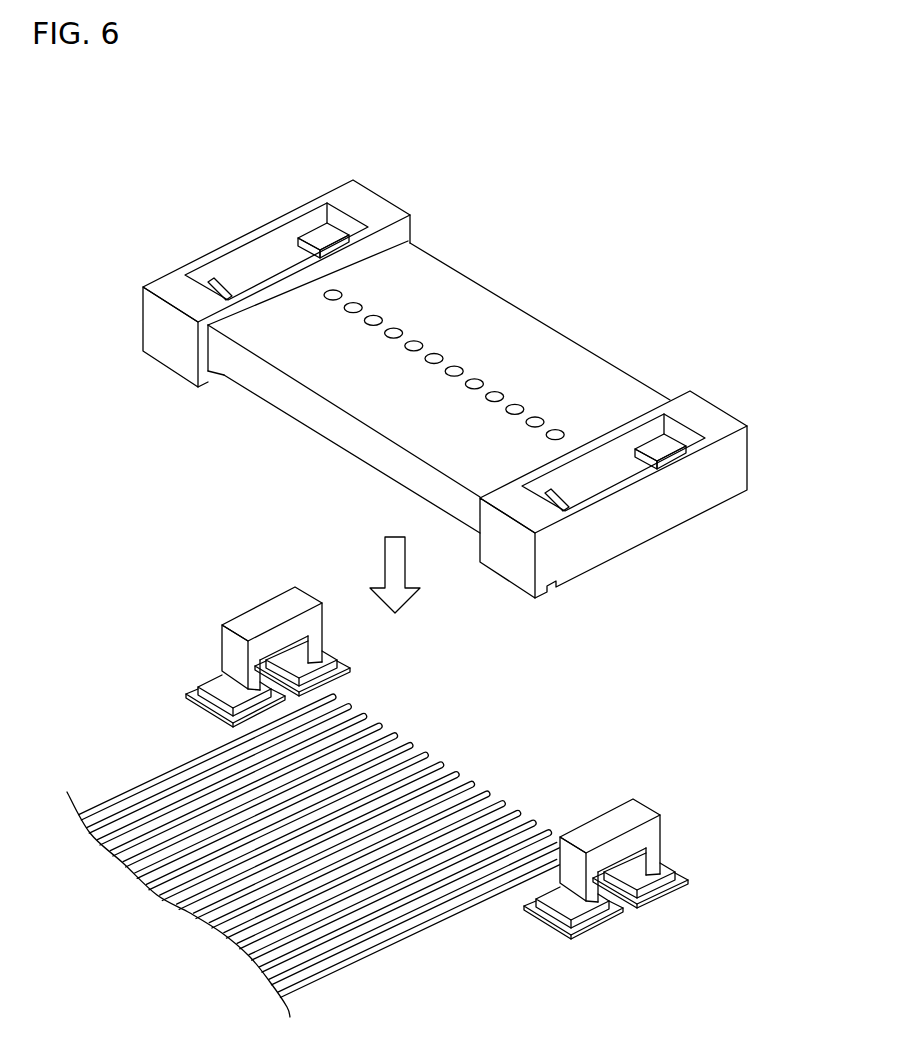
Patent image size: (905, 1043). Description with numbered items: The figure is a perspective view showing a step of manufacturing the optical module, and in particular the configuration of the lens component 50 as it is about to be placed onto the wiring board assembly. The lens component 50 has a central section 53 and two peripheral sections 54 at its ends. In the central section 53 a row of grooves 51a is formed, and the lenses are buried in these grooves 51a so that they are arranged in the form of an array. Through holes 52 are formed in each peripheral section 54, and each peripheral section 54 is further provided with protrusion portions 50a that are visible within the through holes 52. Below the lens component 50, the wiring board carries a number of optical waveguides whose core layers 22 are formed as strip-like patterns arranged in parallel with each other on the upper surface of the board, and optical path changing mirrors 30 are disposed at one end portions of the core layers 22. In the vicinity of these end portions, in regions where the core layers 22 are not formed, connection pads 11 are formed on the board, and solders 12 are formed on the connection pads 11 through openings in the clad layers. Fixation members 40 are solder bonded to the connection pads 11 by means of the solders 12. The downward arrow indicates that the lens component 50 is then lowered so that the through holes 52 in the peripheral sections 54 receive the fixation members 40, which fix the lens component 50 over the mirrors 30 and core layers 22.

The lens component 50 is at (463, 359).
The protrusion portions 50a is at (317, 240).
The grooves 51a is at (410, 337).
The through holes 52 is at (238, 268).
The central section 53 is at (576, 343).
The peripheral sections 54 is at (362, 203).
The fixation members 40 is at (268, 610).
The solders 12 is at (215, 677).
The connection pads 11 is at (200, 688).
The optical path changing mirrors 30 is at (340, 707).
The core layers 22 is at (423, 907).